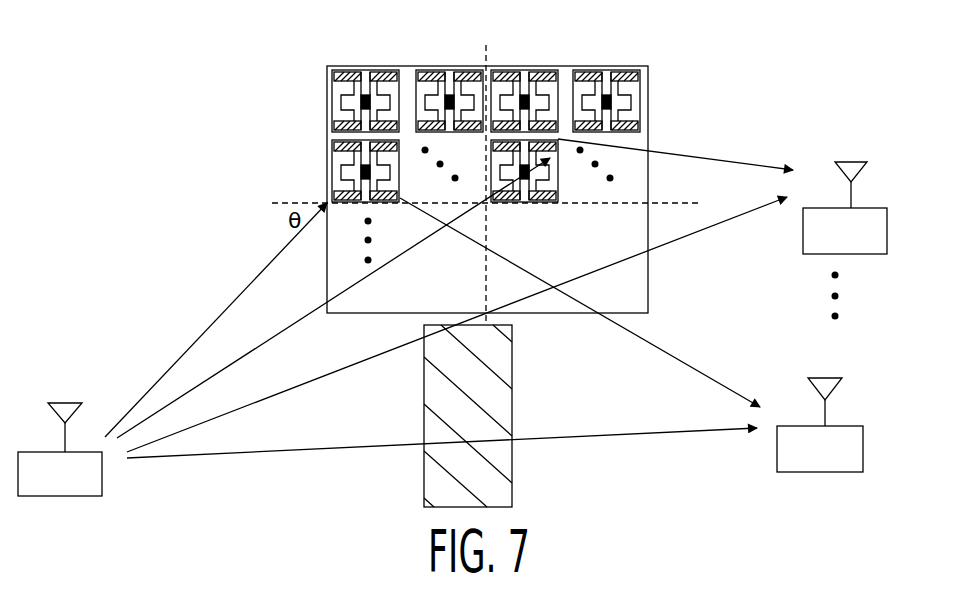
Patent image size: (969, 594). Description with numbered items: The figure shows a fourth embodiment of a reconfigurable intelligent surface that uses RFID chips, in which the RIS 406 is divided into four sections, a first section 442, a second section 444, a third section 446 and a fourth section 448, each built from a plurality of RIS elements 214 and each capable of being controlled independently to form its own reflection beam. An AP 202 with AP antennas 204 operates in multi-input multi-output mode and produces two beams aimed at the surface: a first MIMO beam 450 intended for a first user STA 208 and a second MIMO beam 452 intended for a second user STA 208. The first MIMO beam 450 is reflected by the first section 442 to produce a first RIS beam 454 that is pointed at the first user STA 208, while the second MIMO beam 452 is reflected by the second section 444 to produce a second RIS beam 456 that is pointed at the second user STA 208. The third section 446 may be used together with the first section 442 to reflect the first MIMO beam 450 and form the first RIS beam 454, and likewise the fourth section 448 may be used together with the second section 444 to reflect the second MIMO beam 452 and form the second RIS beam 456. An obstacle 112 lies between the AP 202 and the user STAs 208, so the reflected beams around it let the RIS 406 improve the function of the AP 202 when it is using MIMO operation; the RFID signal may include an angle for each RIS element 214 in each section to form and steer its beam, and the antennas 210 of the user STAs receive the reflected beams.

The obstacle 112 is at (424, 488).
The AP 202 is at (68, 496).
The AP antennas 204 is at (68, 403).
The user STAs 208 is at (868, 208).
The receiver antenna 210 is at (840, 162).
The RIS elements 214 is at (327, 97).
The RIS 406 is at (350, 66).
The first section 442 is at (327, 157).
The second section 444 is at (648, 137).
The third section 446 is at (327, 270).
The fourth section 448 is at (648, 292).
The first MIMO beam 450 is at (240, 295).
The second MIMO beam 452 is at (246, 357).
The first RIS beam 454 is at (667, 353).
The second RIS beam 456 is at (737, 158).